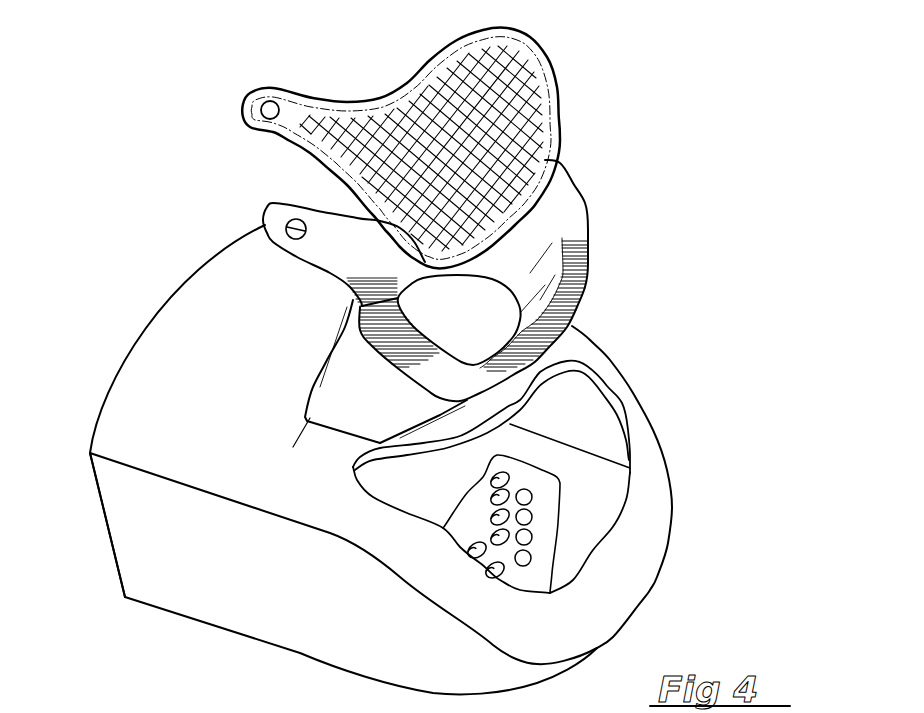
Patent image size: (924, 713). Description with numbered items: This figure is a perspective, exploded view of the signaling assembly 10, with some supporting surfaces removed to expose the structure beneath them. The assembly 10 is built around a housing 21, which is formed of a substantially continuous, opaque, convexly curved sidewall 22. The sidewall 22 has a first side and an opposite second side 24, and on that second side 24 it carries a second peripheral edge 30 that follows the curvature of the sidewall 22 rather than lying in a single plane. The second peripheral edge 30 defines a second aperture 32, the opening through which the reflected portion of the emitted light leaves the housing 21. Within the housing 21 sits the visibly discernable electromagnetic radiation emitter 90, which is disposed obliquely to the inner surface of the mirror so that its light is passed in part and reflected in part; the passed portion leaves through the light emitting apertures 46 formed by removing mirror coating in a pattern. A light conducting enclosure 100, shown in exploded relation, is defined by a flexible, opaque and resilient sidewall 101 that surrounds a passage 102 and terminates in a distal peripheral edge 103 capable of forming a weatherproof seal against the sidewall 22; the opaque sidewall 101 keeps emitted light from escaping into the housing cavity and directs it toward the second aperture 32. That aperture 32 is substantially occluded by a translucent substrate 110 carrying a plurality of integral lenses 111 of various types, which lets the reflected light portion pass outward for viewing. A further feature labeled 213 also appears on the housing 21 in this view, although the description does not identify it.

The signaling assembly 10 is at (753, 207).
The housing 21 is at (180, 553).
The convexly curved sidewall 22 is at (172, 428).
The second side 24 is at (300, 493).
The second peripheral edge 30 is at (627, 493).
The second aperture 32 is at (593, 467).
The light emitting apertures 46 is at (530, 562).
The visibly discernable electromagnetic radiation emitter 90 is at (490, 536).
The light conducting enclosure 100 is at (568, 206).
The sidewall 101 is at (347, 383).
The passage 102 is at (547, 270).
The distal peripheral edge 103 is at (421, 403).
The translucent substrate 110 is at (420, 115).
The lenses 111 is at (497, 82).
The outer edge 213 is at (660, 588).